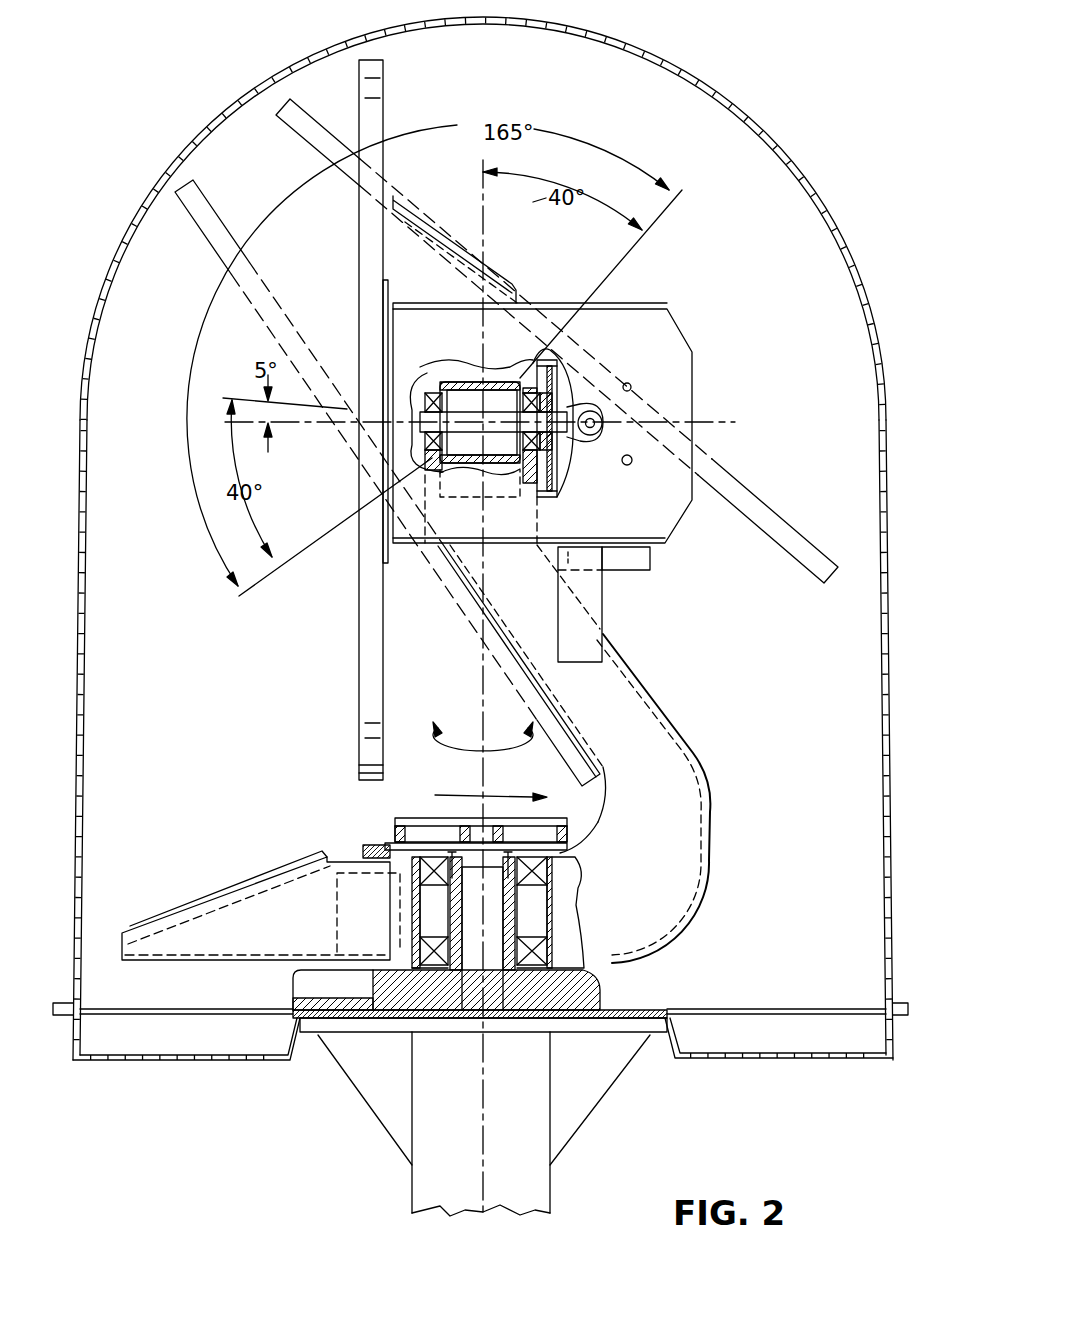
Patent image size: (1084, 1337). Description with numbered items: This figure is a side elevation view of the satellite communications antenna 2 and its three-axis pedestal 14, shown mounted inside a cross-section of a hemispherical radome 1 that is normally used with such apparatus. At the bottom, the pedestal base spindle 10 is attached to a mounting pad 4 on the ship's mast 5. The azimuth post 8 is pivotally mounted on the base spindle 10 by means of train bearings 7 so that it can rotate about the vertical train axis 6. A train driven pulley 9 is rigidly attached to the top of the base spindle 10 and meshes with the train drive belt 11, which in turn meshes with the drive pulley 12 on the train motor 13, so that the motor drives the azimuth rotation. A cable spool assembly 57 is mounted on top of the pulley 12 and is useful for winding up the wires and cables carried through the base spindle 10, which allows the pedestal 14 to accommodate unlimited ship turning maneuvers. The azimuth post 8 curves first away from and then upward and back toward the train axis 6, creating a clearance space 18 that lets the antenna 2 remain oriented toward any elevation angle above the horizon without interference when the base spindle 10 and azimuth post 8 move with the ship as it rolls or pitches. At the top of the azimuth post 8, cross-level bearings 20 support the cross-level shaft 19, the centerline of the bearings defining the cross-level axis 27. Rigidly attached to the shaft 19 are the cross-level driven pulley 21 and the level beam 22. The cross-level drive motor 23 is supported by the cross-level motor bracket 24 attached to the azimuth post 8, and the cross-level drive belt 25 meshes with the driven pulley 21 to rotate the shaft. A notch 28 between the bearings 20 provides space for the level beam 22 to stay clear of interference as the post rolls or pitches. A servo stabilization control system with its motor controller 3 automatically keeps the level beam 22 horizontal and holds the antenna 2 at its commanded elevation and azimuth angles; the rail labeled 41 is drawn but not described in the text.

The radome 1 is at (688, 75).
The satellite communications antenna 2 is at (385, 108).
The motor controller 3 is at (182, 907).
The mounting pad 4 is at (401, 1035).
The ship's mast 5 is at (410, 1173).
The train axis 6 is at (481, 771).
The train bearings 7 is at (550, 903).
The azimuth post 8 is at (690, 753).
The train driven pulley 9 is at (570, 853).
The pedestal base spindle 10 is at (450, 912).
The train drive belt 11 is at (390, 847).
The drive pulley 12 is at (380, 847).
The train motor 13 is at (333, 907).
The three-axis pedestal 14 is at (697, 948).
The clearance space 18 is at (471, 796).
The cross-level shaft 19 is at (573, 413).
The cross-level bearings 20 is at (413, 403).
The cross-level driven pulley 21 is at (553, 457).
The level beam 22 is at (460, 390).
The cross-level drive motor 23 is at (648, 563).
The cross-level motor bracket 24 is at (603, 610).
The cross-level drive belt 25 is at (567, 500).
The cross-level axis 27 is at (712, 420).
The notch 28 is at (497, 500).
The guide rail 41 is at (437, 213).
The cable spool assembly 57 is at (400, 818).